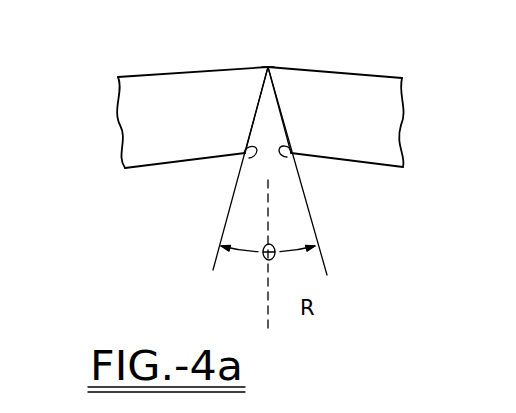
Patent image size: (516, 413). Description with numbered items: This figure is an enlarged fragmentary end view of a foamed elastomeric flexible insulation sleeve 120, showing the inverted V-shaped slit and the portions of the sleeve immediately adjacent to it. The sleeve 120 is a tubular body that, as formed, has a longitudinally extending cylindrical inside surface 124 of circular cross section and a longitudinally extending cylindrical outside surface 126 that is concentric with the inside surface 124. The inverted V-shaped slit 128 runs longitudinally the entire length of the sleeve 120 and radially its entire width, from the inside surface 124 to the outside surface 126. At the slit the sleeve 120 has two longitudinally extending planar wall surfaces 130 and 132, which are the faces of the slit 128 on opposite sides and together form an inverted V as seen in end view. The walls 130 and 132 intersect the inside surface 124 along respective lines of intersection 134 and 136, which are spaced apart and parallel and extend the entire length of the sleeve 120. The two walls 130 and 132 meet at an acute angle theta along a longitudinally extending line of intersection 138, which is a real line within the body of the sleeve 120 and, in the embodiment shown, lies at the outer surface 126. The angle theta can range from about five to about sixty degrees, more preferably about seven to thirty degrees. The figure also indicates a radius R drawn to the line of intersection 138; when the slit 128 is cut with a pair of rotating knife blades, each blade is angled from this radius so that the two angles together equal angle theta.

The insulation sleeve 120 is at (388, 70).
The inside surface 124 is at (136, 168).
The outside surface 126 is at (138, 77).
The inverted V-shaped slit 128 is at (268, 160).
The wall surface 130 is at (256, 94).
The wall surface 132 is at (279, 93).
The line of intersection 134 is at (252, 158).
The line of intersection 136 is at (284, 158).
The line of intersection 138 is at (269, 66).